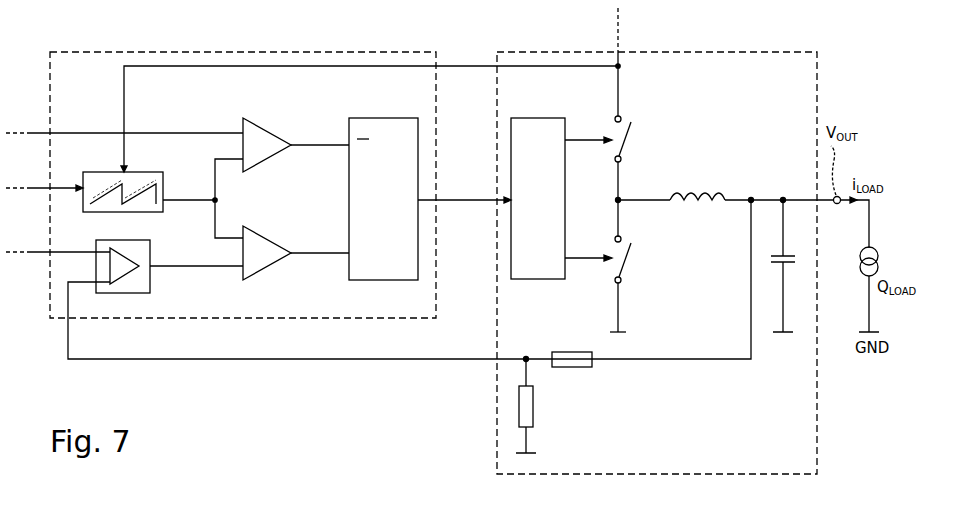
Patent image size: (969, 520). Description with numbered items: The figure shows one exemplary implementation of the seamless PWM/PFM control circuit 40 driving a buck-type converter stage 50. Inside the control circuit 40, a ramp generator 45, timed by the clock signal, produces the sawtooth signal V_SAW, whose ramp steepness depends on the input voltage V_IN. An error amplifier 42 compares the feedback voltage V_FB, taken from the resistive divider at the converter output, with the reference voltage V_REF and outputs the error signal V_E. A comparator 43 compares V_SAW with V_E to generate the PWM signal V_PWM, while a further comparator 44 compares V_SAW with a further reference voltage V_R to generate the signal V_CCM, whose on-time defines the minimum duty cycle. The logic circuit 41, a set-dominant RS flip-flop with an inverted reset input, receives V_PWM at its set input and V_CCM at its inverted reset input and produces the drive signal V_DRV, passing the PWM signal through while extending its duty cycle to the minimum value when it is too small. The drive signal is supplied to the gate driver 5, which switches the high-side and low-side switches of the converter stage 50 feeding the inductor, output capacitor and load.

The control circuit 40 is at (377, 194).
The converter stage 50 is at (667, 237).
The gate driver 5 is at (545, 280).
The logic circuit 41 is at (390, 281).
The error amplifier 42 is at (148, 282).
The comparator 43 is at (268, 268).
The comparator 44 is at (268, 160).
The ramp generator 45 is at (150, 172).